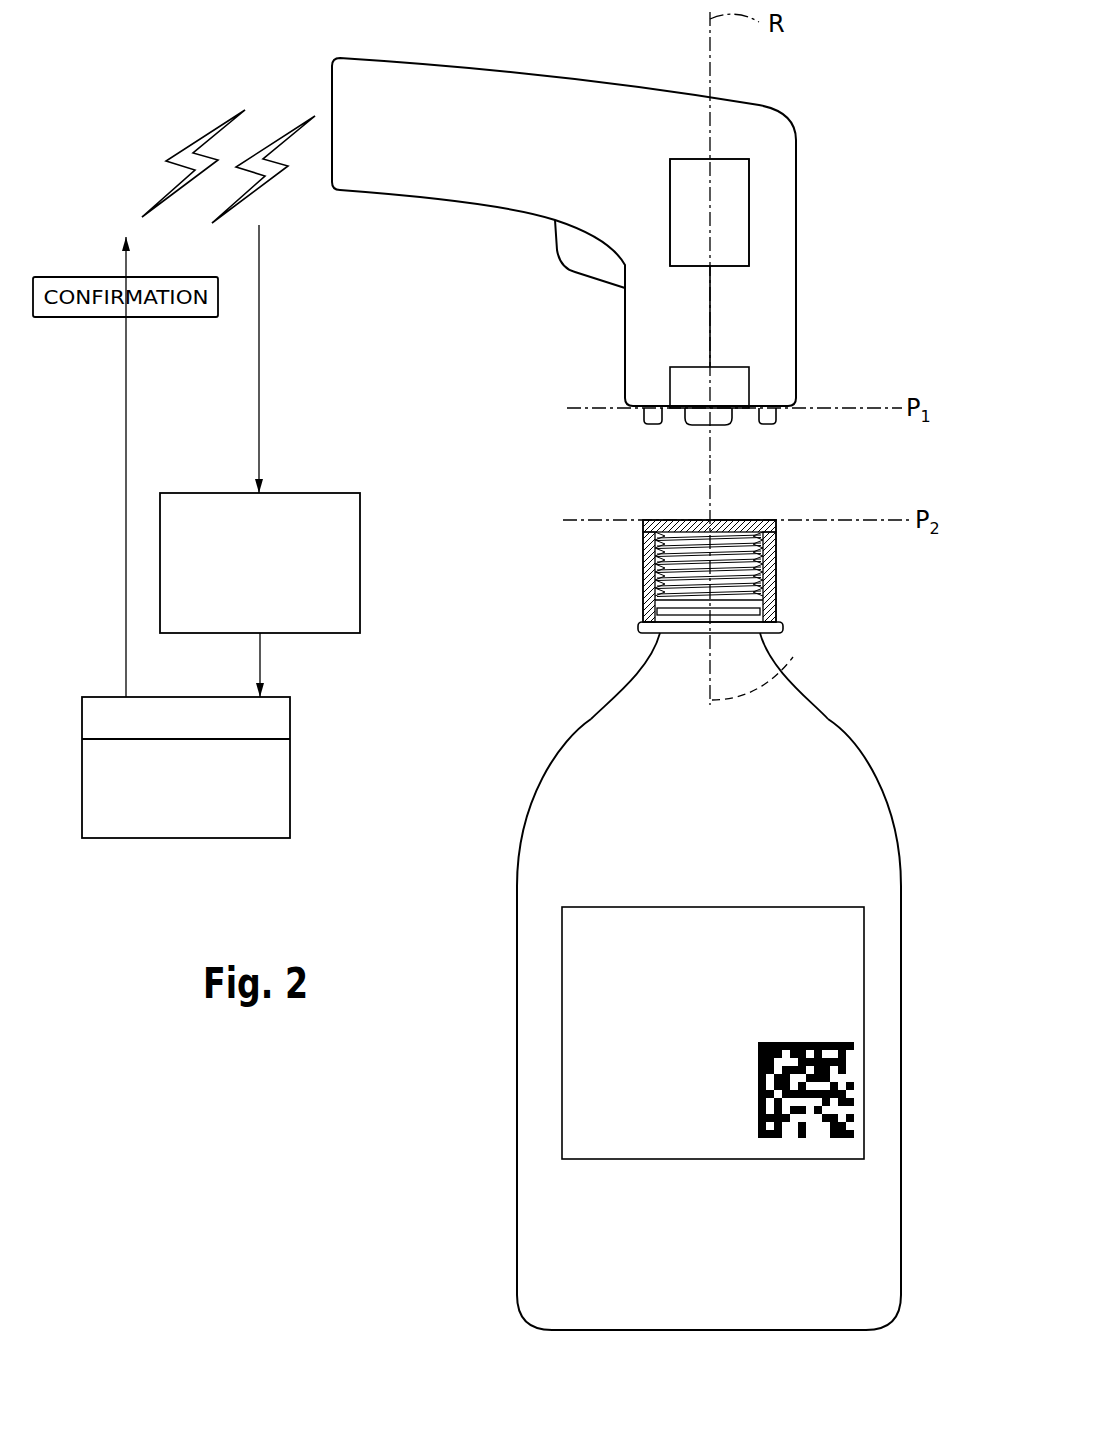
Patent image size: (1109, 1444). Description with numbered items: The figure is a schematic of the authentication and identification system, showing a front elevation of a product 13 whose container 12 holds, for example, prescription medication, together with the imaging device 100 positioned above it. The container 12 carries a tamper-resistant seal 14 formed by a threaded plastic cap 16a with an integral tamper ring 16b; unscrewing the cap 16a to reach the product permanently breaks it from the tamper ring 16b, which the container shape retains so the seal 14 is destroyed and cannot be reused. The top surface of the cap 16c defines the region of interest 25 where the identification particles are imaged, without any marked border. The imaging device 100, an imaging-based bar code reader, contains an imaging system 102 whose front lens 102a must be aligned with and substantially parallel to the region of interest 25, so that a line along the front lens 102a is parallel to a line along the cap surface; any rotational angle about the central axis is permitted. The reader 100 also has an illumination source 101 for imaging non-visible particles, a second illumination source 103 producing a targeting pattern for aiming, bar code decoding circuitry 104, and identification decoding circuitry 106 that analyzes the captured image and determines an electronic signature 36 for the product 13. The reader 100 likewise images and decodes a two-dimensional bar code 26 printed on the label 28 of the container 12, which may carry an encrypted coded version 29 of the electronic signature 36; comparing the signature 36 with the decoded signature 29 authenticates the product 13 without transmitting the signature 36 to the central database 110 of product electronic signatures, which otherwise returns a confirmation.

The imaging device 100 is at (800, 247).
The imaging system 102 is at (766, 150).
The bar code decoding circuitry 104 is at (732, 210).
The identification decoding circuitry 106 is at (685, 198).
The illumination source 101 is at (768, 425).
The second illumination source 103 is at (654, 422).
The front lens 102a is at (688, 417).
The electronic signature 36 is at (292, 493).
The central database 110 is at (290, 718).
The tamper-resistant seal 14 is at (729, 561).
The region of interest 25 is at (683, 516).
The threaded plastic cap 16a is at (643, 547).
The integral tamper ring 16b is at (640, 622).
The top surface of the cap 16c is at (736, 522).
The product 13 is at (661, 981).
The container 12 is at (517, 1162).
The label 28 is at (562, 995).
The bar code 26 is at (752, 1107).
The coded version of the electronic signature 29 is at (760, 1160).